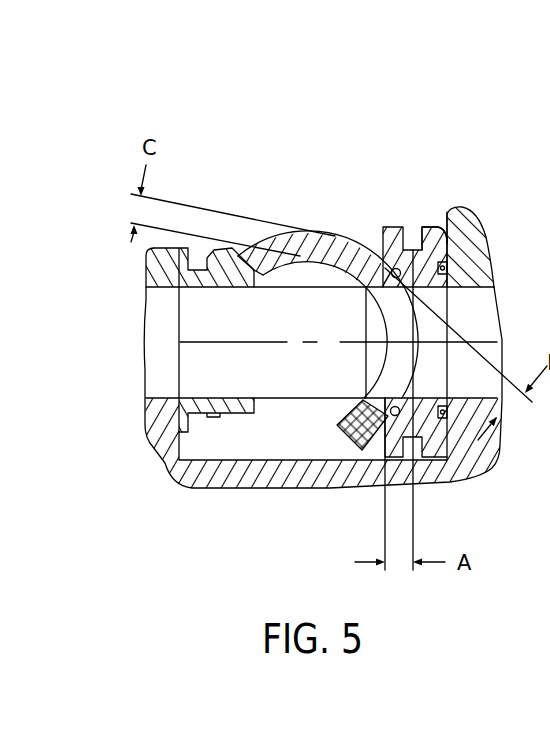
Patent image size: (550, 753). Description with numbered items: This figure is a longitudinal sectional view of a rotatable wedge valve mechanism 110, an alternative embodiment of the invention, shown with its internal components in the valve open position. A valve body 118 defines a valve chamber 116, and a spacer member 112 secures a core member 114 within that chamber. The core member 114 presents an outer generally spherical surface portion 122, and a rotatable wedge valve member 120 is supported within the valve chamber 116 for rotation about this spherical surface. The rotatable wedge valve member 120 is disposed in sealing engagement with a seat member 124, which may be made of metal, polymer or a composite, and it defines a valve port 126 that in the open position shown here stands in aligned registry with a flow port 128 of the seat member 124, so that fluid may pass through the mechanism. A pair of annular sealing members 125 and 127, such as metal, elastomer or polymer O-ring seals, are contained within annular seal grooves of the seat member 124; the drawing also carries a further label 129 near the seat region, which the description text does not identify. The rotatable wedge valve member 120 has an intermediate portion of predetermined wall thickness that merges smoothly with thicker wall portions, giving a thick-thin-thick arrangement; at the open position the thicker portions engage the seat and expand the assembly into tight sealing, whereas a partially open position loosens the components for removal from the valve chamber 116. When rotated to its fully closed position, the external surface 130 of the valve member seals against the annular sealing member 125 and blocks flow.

The rotatable wedge valve mechanism 110 is at (212, 147).
The spacer member 112 is at (185, 417).
The core member 114 is at (277, 277).
The valve chamber 116 is at (356, 448).
The valve body 118 is at (218, 480).
The rotatable wedge valve member 120 is at (331, 253).
The outer generally spherical surface portion 122 is at (357, 267).
The seat member 124 is at (432, 243).
The annular sealing member 125 is at (401, 248).
The valve port 126 is at (397, 303).
The annular sealing member 127 is at (450, 266).
The flow port 128 is at (428, 378).
The angled surface 129 is at (514, 429).
The external surface 130 is at (273, 247).